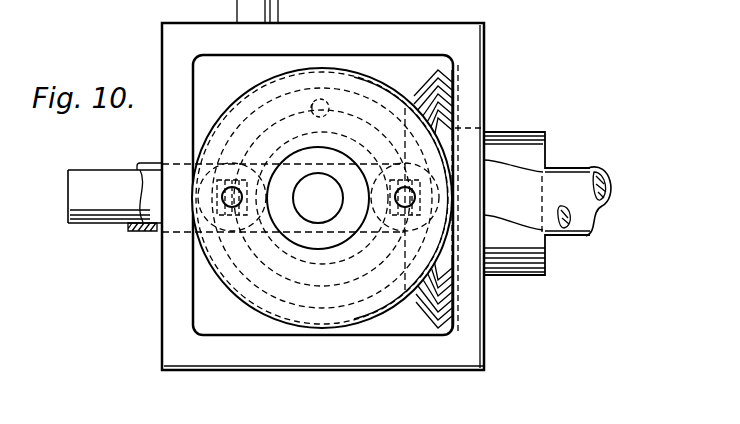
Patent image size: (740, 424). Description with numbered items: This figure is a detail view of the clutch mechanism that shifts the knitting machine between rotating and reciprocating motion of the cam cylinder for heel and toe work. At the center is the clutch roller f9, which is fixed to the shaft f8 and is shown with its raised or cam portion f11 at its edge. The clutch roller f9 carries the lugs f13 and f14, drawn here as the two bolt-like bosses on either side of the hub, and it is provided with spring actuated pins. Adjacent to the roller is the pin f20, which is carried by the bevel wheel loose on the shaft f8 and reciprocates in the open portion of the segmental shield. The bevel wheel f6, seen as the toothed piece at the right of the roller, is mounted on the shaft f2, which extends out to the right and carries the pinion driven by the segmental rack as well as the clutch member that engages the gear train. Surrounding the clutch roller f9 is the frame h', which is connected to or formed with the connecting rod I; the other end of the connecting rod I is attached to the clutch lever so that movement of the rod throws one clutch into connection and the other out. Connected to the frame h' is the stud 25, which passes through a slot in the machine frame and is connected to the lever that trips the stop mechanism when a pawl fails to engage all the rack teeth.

The stud 25 is at (250, 6).
The frame h' is at (323, 210).
The bevel wheel f6 is at (440, 103).
The raised or cam portion f11 is at (400, 330).
The clutch roller f9 is at (345, 325).
The shaft f8 is at (318, 198).
The pin f20 is at (311, 108).
The lug f13 is at (230, 199).
The lug f14 is at (407, 205).
The connecting rod I is at (557, 237).
The shaft f2 is at (592, 170).